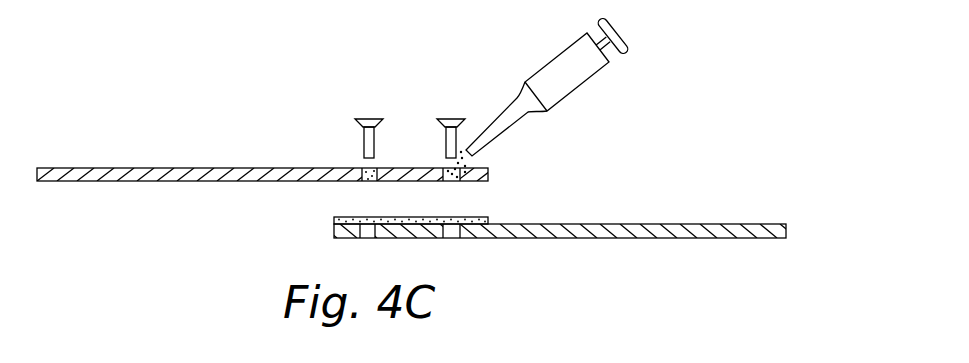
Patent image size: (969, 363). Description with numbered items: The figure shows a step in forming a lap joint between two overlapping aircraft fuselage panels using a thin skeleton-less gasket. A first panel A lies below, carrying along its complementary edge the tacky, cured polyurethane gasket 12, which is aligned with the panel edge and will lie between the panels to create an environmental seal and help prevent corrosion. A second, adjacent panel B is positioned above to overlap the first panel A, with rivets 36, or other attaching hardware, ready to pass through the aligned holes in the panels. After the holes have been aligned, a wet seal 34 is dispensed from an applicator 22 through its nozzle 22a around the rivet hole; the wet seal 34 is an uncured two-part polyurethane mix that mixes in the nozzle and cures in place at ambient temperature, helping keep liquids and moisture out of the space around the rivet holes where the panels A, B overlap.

The gasket 12 is at (472, 216).
The syringe dispenser 22 is at (523, 86).
The dispenser nozzle 22a is at (548, 70).
The wet seal 34 is at (470, 163).
The rivets 36 is at (370, 119).
The first panel A is at (600, 239).
The second panel B is at (205, 167).